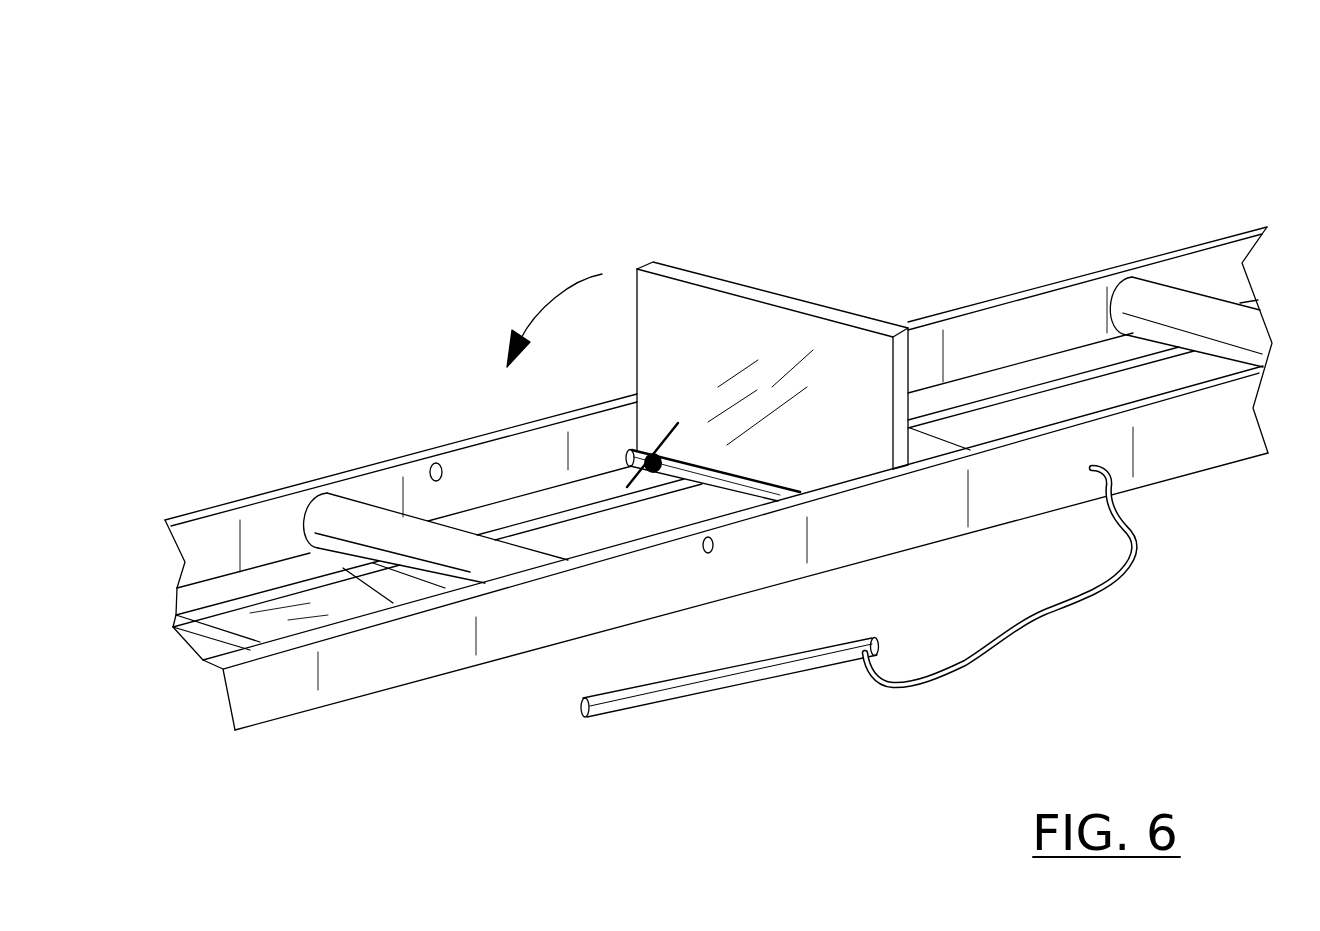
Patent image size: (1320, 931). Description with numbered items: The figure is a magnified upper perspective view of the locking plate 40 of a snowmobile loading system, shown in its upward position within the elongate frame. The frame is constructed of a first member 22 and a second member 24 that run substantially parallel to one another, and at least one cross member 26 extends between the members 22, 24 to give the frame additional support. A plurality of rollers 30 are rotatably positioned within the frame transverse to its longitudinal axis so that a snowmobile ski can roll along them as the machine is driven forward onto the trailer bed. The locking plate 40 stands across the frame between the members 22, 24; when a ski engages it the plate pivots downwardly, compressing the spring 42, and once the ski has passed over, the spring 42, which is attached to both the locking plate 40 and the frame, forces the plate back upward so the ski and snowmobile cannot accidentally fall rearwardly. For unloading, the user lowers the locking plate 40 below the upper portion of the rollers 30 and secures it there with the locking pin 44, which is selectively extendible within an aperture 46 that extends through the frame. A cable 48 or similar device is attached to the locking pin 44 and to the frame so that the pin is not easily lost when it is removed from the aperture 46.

The first member 22 is at (963, 303).
The second member 24 is at (338, 678).
The cross member 26 is at (240, 617).
The rollers 30 is at (1146, 297).
The locking plate 40 is at (722, 309).
The spring 42 is at (647, 455).
The locking pin 44 is at (710, 692).
The aperture 46 is at (435, 463).
The cable 48 is at (1107, 590).